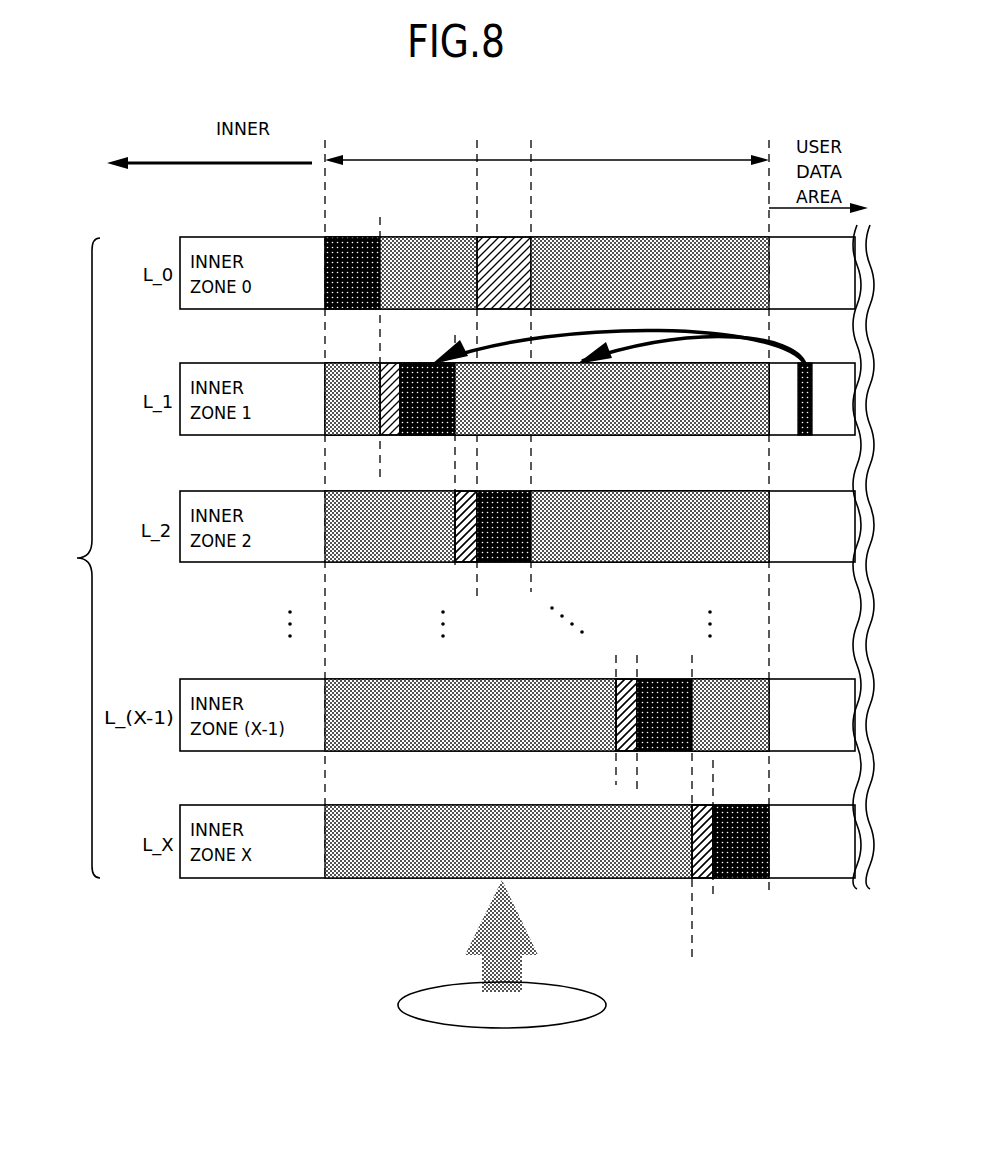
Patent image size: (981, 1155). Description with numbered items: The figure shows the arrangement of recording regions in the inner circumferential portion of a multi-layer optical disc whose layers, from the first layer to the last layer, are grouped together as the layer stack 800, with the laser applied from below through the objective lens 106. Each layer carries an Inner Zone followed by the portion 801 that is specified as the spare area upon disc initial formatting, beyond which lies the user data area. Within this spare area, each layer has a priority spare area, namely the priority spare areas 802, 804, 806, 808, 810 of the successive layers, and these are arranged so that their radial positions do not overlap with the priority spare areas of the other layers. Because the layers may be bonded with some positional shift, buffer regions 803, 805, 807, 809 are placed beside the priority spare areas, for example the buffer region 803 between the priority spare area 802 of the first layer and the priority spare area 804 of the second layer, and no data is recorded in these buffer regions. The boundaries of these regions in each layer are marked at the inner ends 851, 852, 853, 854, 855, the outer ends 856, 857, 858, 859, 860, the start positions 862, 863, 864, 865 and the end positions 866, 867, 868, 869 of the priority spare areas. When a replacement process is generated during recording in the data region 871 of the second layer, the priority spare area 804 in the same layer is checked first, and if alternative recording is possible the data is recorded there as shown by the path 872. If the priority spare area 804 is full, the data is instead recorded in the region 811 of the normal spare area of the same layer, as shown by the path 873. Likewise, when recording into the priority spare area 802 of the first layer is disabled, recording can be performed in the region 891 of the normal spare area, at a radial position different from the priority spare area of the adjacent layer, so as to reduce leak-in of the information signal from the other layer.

The information recording layers 800 is at (63, 558).
The spare area portion 801 is at (547, 160).
The priority spare area of layer L_0 802 is at (350, 237).
The buffer region 803 is at (391, 428).
The priority spare area of layer L_1 804 is at (432, 434).
The buffer region 805 is at (466, 561).
The priority spare area of layer L_2 806 is at (503, 565).
The buffer region 807 is at (626, 750).
The priority spare area of layer L_(X-1) 808 is at (668, 680).
The buffer region 809 is at (706, 878).
The priority spare area of layer L_X 810 is at (742, 805).
The normal spare area region 811 is at (333, 381).
The inner end of layer L_0 recording area 851 is at (323, 254).
The inner end of layer L_1 recording area 852 is at (323, 428).
The inner end of layer L_2 recording area 853 is at (330, 540).
The inner end of layer L_(X-1) recording area 854 is at (330, 750).
The inner end of layer L_X recording area 855 is at (330, 878).
The outer end of layer L_0 inner zone 856 is at (762, 271).
The outer end of layer L_1 inner zone 857 is at (763, 424).
The outer end of layer L_2 inner zone 858 is at (763, 551).
The outer end of layer L_(X-1) inner zone 859 is at (764, 729).
The outer end of layer L_X inner zone 860 is at (765, 878).
The start position of defect management area L_1 862 is at (404, 354).
The start position of defect management area L_2 863 is at (478, 565).
The start position of defect management area L_(X-1) 864 is at (636, 758).
The start position of defect management area L_X 865 is at (713, 880).
The end position of defect management area L_0 866 is at (400, 232).
The end position of defect management area L_1 867 is at (468, 404).
The end position of defect management area L_2 868 is at (533, 490).
The end position of defect management area L_(X-1) 869 is at (692, 680).
The data region 871 is at (809, 380).
The recording into priority spare area 872 is at (577, 330).
The recording into normal spare area 873 is at (606, 330).
The region of normal spare area 891 is at (503, 237).
The objective lens 106 is at (578, 997).